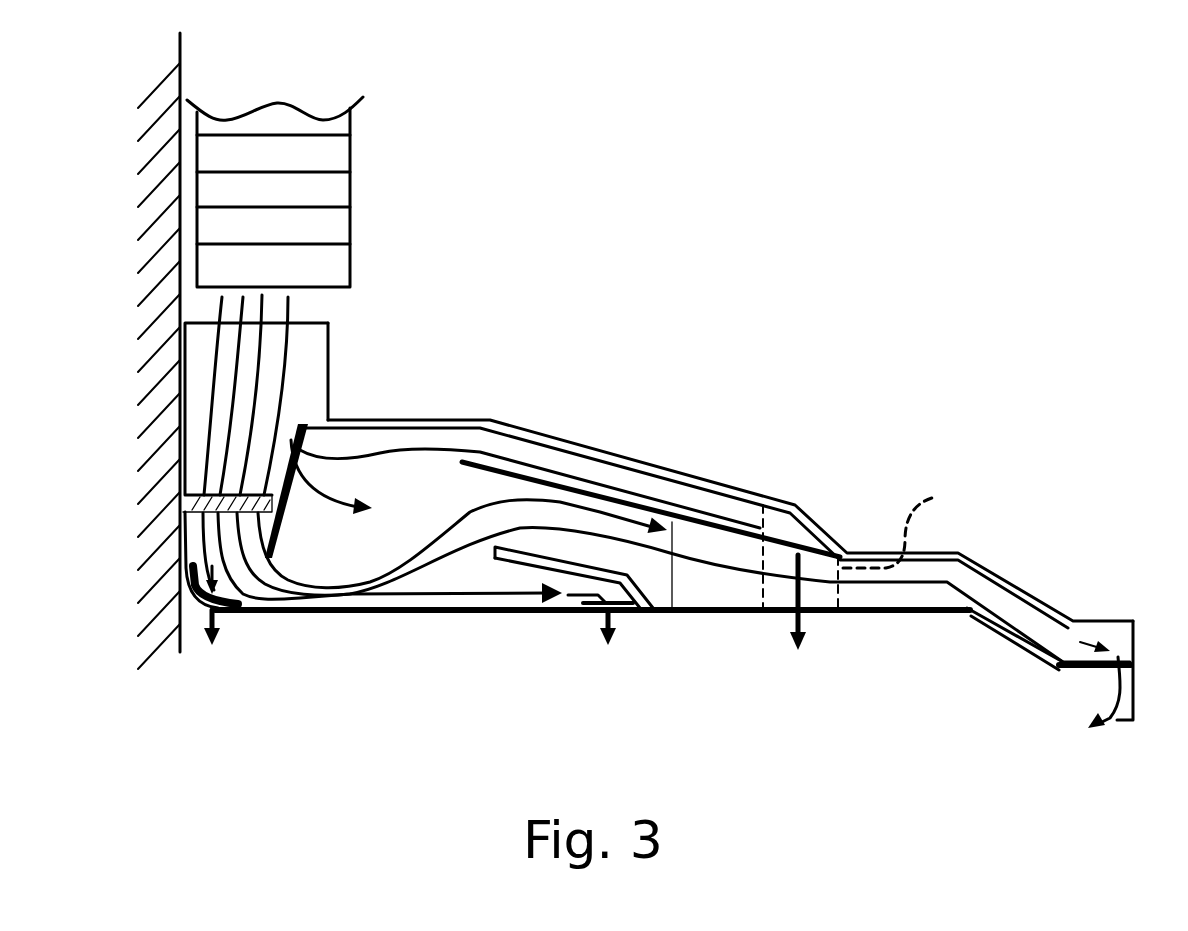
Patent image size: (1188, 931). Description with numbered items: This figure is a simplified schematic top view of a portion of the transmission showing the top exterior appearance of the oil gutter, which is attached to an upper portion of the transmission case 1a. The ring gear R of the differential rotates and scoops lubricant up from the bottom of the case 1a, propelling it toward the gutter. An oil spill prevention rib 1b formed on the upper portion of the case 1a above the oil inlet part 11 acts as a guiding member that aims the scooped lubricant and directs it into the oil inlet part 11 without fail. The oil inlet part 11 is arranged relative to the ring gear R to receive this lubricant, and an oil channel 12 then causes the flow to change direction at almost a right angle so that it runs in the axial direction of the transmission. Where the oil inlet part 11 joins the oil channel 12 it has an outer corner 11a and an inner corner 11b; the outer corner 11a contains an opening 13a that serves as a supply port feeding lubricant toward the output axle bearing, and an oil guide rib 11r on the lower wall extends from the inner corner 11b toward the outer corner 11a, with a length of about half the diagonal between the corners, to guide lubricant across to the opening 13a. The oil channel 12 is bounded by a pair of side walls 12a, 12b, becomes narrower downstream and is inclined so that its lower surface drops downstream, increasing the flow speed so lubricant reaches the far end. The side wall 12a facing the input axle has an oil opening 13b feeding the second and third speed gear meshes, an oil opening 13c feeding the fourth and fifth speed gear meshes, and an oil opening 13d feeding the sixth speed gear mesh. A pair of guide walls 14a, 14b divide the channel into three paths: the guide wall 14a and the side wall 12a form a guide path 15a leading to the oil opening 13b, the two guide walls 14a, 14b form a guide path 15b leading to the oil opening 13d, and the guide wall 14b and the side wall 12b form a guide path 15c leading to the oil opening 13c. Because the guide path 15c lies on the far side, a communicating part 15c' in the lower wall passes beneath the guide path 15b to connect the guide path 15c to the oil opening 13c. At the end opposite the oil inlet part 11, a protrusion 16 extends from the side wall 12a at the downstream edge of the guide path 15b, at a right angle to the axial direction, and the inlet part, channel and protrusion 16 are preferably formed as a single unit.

The transmission case 1a is at (157, 78).
The ring gear R is at (303, 155).
The oil inlet part 11 is at (275, 342).
The inner corner 11b is at (350, 395).
The oil spill prevention rib 1b is at (223, 493).
The outer corner 11a is at (196, 619).
The opening 13a is at (237, 612).
The oil guide rib 11r is at (283, 527).
The oil channel 12 is at (413, 473).
The side wall 12b is at (577, 443).
The guide path 15c is at (686, 528).
The communicating part 15c' is at (925, 525).
The guide wall 14b is at (617, 500).
The guide path 15b is at (697, 615).
The guide wall 14a is at (528, 560).
The guide path 15a is at (549, 578).
The oil opening 13b is at (625, 615).
The oil opening 13c is at (782, 615).
The side wall 12a is at (902, 617).
The oil opening 13d is at (1102, 677).
The protrusion 16 is at (1127, 712).